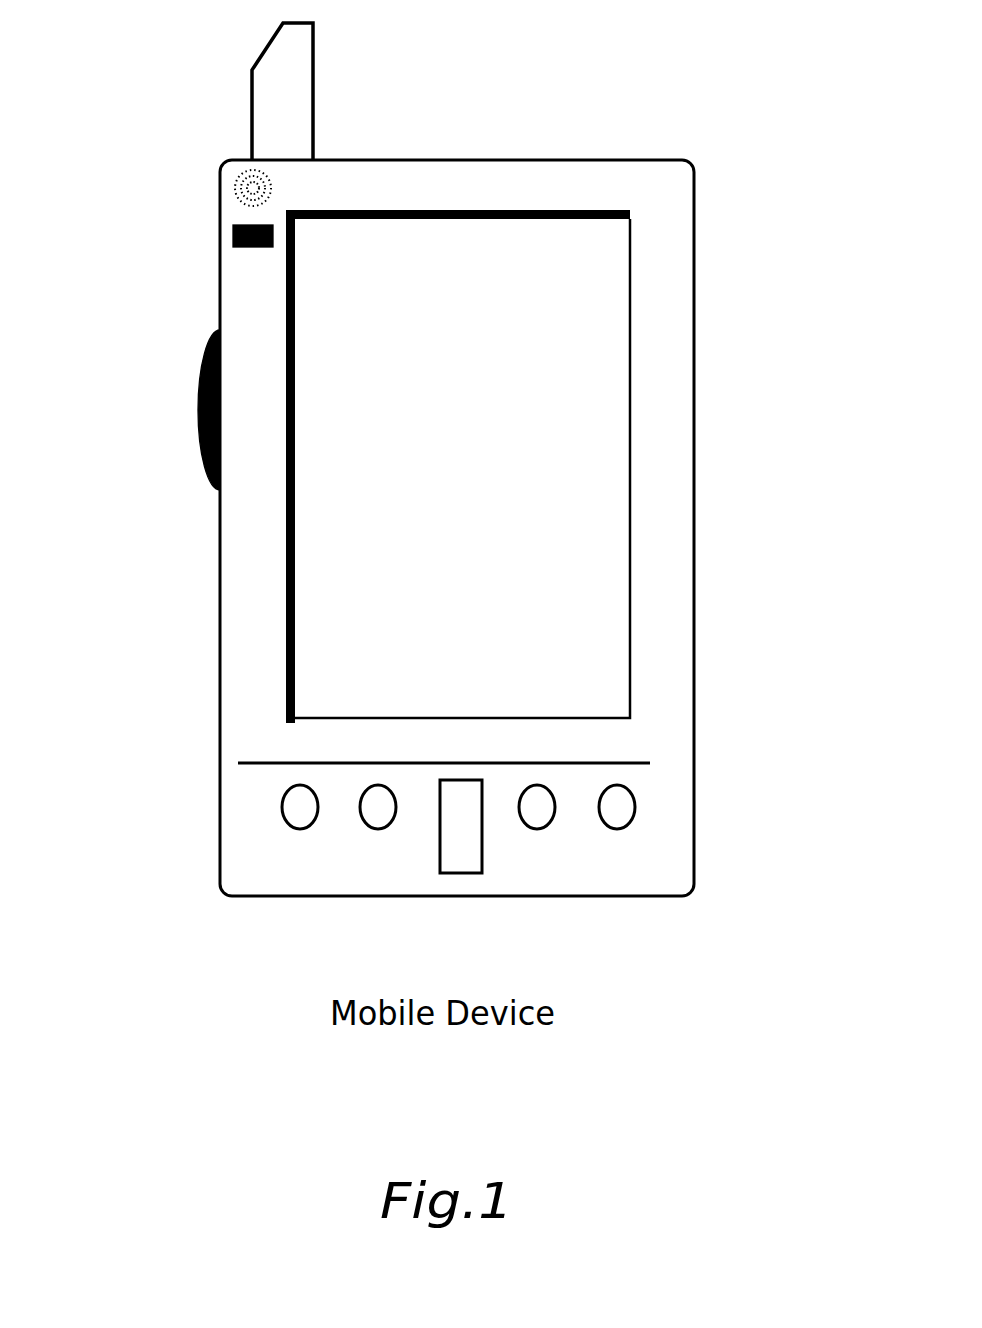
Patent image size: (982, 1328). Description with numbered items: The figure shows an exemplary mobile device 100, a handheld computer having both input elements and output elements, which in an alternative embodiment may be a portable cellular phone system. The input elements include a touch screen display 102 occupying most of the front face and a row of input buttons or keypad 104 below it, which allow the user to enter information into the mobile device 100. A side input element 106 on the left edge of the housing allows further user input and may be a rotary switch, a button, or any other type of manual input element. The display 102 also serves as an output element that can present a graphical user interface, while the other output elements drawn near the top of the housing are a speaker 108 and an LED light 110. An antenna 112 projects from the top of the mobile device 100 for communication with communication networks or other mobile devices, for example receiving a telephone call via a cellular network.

The mobile device 100 is at (693, 180).
The touch screen display 102 is at (318, 648).
The input buttons or keypad 104 is at (620, 818).
The side input element 106 is at (198, 383).
The speaker 108 is at (235, 188).
The LED light 110 is at (233, 237).
The antenna 112 is at (313, 77).